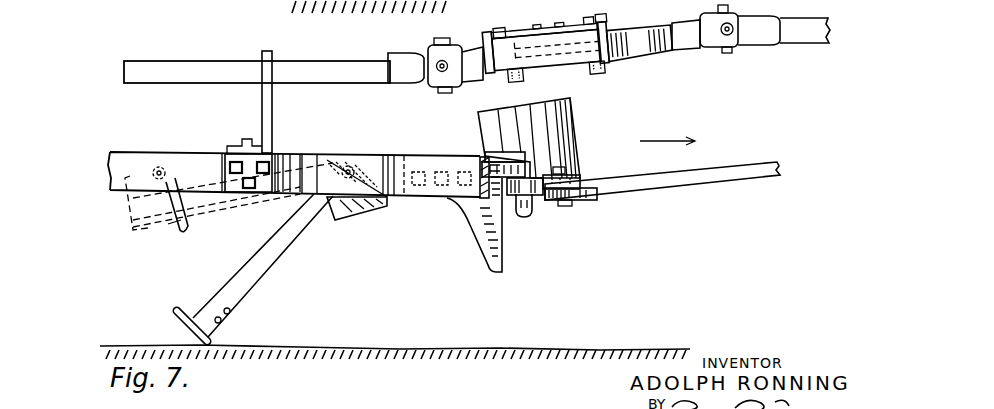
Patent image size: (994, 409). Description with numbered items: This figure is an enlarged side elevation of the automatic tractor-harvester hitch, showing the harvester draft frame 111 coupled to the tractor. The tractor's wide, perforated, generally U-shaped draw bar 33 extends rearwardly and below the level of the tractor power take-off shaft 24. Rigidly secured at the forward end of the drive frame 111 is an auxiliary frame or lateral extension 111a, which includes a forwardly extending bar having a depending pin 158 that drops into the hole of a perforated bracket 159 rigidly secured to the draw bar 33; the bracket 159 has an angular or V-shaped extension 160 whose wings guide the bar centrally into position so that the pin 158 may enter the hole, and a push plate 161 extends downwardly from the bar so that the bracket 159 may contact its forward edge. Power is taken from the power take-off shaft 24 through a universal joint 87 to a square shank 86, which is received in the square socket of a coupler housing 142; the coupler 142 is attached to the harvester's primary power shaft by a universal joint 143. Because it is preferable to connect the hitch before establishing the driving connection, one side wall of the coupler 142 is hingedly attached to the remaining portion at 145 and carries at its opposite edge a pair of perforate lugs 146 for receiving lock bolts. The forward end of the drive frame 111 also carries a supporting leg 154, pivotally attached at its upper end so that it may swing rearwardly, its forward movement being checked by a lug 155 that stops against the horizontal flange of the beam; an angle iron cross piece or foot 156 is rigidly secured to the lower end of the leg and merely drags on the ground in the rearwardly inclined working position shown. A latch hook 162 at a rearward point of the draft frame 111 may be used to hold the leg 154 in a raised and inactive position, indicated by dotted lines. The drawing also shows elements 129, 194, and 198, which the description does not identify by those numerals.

The power take-off shaft 24 is at (816, 34).
The draw bar 33 is at (710, 178).
The square shank 86 is at (640, 47).
The universal joint 87 is at (727, 35).
The draft frame 111 is at (132, 168).
The auxiliary frame or lateral extension 111a is at (281, 172).
The shaft 129 is at (172, 72).
The coupler housing 142 is at (480, 73).
The universal joint 143 is at (440, 70).
The hinges 145 is at (590, 73).
The perforate lugs 146 is at (607, 24).
The supporting leg 154 is at (270, 258).
The lug 155 is at (357, 210).
The angle iron cross piece or foot 156 is at (198, 331).
The depending pin 158 is at (529, 213).
The perforated bracket 159 is at (572, 180).
The V-shaped extension 160 is at (560, 128).
The push plate 161 is at (488, 267).
The latch hook 162 is at (180, 230).
The cylinder body 194 is at (604, 42).
The top bar 198 is at (504, 38).